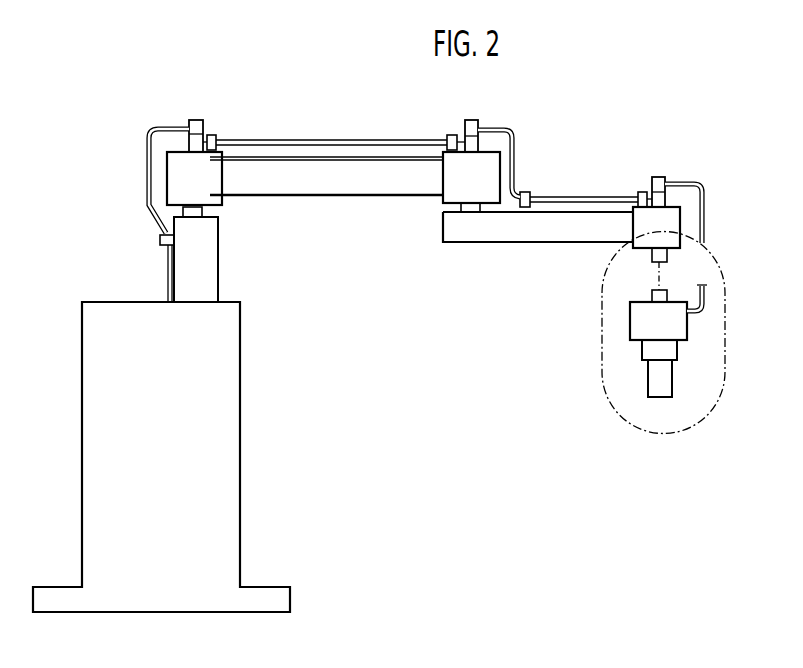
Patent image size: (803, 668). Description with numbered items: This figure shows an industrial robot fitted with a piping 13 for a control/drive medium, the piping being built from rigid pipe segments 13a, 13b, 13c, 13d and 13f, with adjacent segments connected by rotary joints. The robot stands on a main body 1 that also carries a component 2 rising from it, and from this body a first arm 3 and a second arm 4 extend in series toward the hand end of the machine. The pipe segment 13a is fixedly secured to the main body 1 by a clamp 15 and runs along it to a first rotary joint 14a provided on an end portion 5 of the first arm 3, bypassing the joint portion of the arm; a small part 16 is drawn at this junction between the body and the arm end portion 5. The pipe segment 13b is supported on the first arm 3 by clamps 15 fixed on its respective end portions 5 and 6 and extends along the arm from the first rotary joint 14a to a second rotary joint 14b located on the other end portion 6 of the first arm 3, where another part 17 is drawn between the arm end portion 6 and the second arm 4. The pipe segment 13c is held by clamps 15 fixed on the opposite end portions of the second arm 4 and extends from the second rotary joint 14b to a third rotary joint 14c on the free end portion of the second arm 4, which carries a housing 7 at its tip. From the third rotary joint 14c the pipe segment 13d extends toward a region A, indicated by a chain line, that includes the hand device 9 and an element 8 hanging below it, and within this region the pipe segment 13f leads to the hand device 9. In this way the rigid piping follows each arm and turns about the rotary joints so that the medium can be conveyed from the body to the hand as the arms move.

The main body 1 is at (228, 502).
The column 2 is at (210, 285).
The first arm 3 is at (352, 185).
The second arm 4 is at (502, 233).
The end portion 5 is at (170, 168).
The end portion 6 is at (487, 172).
The wrist joint housing 7 is at (672, 222).
The hand / end effector 8 is at (642, 352).
The hand device 9 is at (630, 324).
The piping 13 is at (268, 118).
The pipe segment 13a is at (153, 125).
The pipe segment 13b is at (303, 138).
The pipe segment 13c is at (503, 122).
The pipe segment 13d is at (693, 180).
The pipe segment 13f is at (703, 296).
The first rotary joint 14a is at (197, 118).
The second rotary joint 14b is at (472, 118).
The third rotary joint 14c is at (660, 177).
The clamp 15 is at (213, 135).
The rotary joint 16 is at (202, 211).
The rotary joint 17 is at (460, 207).
The region A is at (620, 412).